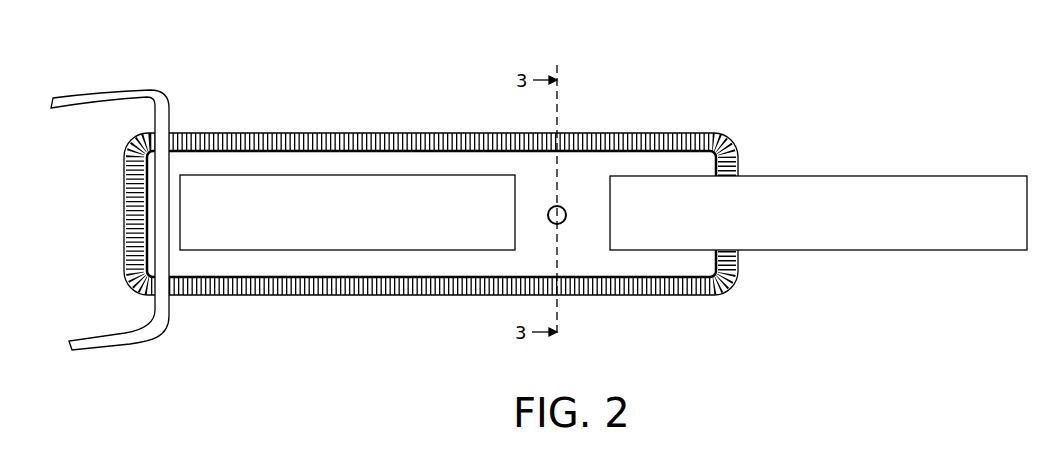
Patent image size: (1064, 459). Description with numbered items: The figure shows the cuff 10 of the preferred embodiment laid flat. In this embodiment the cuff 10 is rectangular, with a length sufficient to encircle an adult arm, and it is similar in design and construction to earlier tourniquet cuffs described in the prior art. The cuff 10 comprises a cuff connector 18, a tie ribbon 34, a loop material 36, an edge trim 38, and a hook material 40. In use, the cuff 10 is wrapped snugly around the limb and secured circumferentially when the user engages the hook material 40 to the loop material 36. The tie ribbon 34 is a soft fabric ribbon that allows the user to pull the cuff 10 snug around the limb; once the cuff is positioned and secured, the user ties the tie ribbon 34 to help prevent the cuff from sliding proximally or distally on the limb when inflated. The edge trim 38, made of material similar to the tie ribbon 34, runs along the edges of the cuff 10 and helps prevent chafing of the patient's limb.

The cuff 10 is at (784, 291).
The cuff connector 18 is at (562, 206).
The tie ribbon 34 is at (158, 90).
The loop material 36 is at (195, 252).
The edge trim 38 is at (358, 293).
The hook material 40 is at (970, 176).